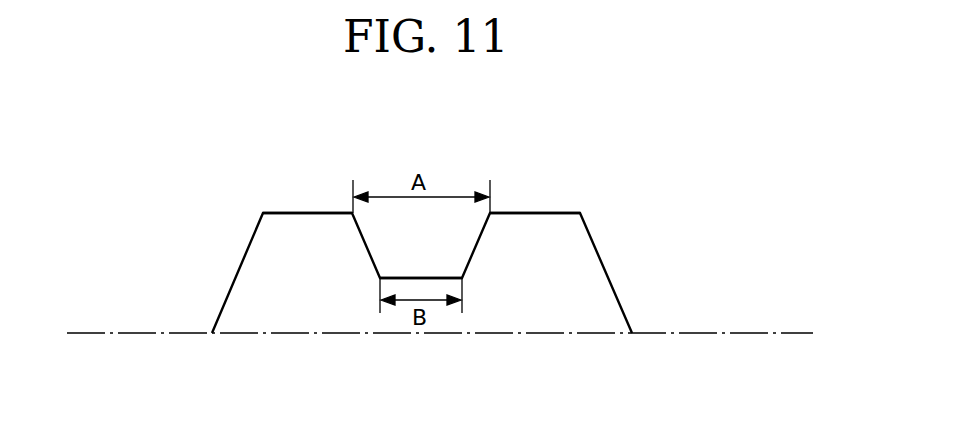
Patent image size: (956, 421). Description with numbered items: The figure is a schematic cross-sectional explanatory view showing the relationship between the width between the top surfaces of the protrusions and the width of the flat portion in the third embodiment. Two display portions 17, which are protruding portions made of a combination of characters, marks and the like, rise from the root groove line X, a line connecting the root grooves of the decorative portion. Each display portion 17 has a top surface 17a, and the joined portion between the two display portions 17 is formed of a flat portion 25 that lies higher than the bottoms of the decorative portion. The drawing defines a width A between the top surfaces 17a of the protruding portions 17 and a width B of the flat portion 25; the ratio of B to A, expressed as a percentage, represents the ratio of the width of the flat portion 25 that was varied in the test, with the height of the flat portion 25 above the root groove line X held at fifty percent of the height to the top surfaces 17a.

The display portion 17 is at (268, 247).
The top surface 17a is at (295, 213).
The flat portion 25 is at (430, 278).
The root groove line X is at (768, 334).